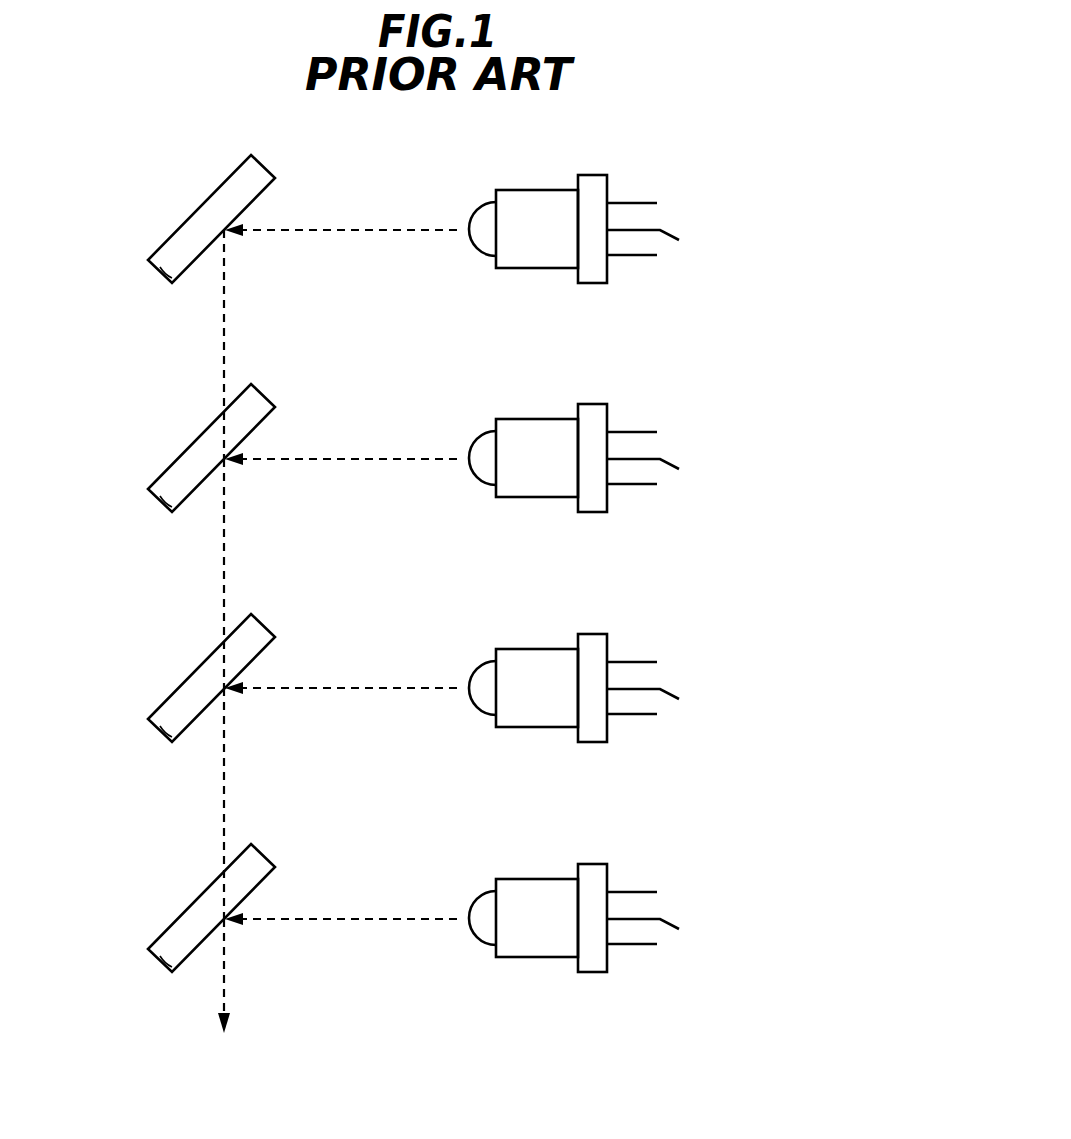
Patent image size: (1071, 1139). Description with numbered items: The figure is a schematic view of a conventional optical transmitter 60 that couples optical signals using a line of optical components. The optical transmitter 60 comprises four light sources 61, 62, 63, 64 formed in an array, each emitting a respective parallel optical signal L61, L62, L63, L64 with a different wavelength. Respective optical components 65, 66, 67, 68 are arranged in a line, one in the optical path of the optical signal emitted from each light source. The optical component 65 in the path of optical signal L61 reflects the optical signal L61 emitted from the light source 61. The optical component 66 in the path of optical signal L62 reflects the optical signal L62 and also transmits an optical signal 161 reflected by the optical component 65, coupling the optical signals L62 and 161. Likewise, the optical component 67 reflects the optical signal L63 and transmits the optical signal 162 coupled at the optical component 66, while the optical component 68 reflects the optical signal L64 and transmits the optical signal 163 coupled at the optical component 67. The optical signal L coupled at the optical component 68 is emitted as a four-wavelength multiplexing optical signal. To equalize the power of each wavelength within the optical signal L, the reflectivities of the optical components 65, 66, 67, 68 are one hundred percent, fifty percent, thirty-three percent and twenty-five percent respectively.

The optical transmitter 60 is at (728, 209).
The light source 61 is at (593, 198).
The light source 62 is at (595, 428).
The light source 63 is at (595, 663).
The light source 64 is at (595, 893).
The optical component 65 is at (167, 268).
The optical component 66 is at (167, 493).
The optical component 67 is at (167, 722).
The optical component 68 is at (167, 958).
The optical signal L61 is at (341, 190).
The optical signal L62 is at (341, 420).
The optical signal L63 is at (341, 652).
The optical signal L64 is at (341, 880).
The optical signal 161 is at (226, 286).
The optical signal 162 is at (226, 522).
The optical signal 163 is at (226, 752).
The optical signal L is at (275, 1003).